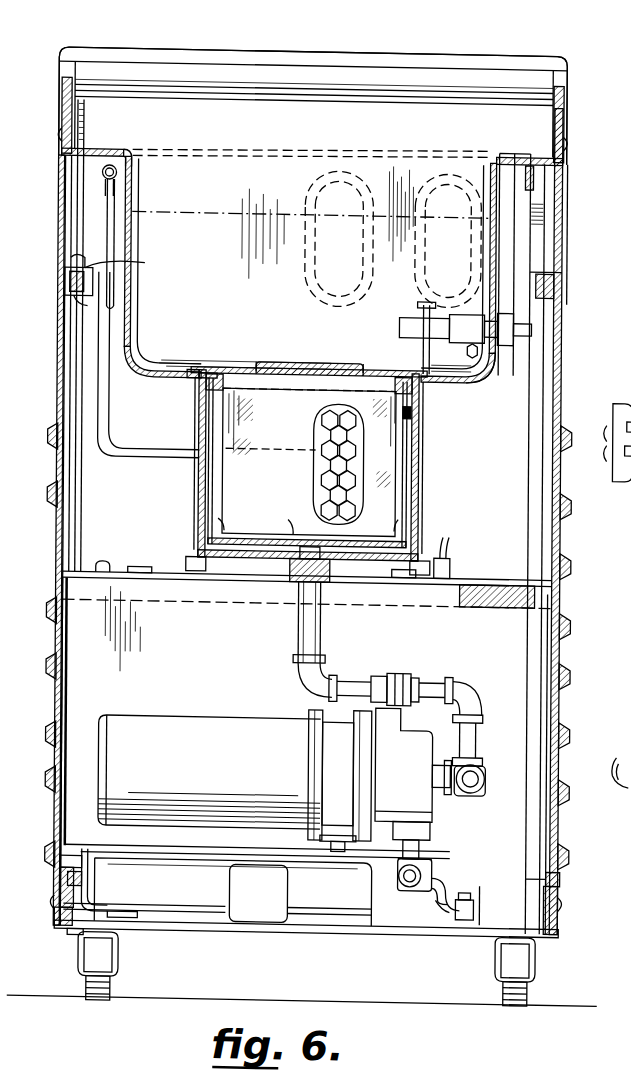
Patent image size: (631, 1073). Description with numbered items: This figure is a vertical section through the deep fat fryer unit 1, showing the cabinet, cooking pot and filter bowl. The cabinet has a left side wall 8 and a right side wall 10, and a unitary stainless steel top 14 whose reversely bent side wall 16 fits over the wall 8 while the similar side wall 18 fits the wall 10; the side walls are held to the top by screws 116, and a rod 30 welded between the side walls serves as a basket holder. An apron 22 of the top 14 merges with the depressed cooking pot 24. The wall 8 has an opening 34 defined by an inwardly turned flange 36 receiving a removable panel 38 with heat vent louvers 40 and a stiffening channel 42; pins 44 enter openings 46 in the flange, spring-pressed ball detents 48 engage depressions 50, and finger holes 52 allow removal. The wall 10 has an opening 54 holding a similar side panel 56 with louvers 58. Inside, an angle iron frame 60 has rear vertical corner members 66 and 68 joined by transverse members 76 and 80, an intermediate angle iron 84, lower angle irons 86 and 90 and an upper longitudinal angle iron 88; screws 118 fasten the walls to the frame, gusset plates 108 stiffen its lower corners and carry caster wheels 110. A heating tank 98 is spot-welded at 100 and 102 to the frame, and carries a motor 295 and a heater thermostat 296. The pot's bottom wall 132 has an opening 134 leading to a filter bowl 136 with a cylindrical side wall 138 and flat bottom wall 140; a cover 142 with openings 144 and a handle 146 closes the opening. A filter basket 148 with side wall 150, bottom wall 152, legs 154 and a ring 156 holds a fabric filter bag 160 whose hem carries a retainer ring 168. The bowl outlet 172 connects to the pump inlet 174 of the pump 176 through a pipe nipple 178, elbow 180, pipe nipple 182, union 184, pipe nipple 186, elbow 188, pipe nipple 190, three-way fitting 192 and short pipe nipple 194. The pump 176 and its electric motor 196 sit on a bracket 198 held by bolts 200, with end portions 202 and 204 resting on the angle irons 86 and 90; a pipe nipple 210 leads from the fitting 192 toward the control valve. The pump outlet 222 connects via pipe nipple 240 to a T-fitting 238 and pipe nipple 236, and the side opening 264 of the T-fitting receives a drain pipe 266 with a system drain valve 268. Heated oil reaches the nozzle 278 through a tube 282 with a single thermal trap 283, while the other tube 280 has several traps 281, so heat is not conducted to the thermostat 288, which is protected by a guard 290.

The deep fat fryer unit 1 is at (192, 36).
The left side wall 8 is at (57, 199).
The right side wall 10 is at (562, 265).
The top 14 is at (272, 47).
The reversely bent side wall 16 is at (57, 99).
The reversely bent side wall 18 is at (559, 94).
The apron 22 is at (105, 155).
The cooking pot 24 is at (302, 159).
The rod 30 is at (437, 101).
The opening 34 is at (62, 879).
The inwardly turned flange 36 is at (98, 271).
The removable panel 38 is at (56, 396).
The heat vent louvers 40 is at (53, 444).
The channel 42 is at (73, 304).
The pins 44 is at (60, 866).
The openings 46 is at (84, 886).
The spring-pressed ball detents 48 is at (63, 284).
The depressions 50 is at (78, 266).
The finger holes 52 is at (60, 334).
The opening 54 is at (566, 864).
The side panel 56 is at (564, 300).
The louvers 58 is at (563, 514).
The frame 60 is at (538, 219).
The vertical corner member 66 is at (78, 228).
The vertical corner member 68 is at (534, 242).
The transverse angle iron member 76 is at (522, 214).
The transverse angle iron member 80 is at (215, 928).
The intermediate angle iron 84 is at (58, 589).
The lower angle iron 86 is at (60, 922).
The longitudinal angle iron 88 is at (555, 165).
The angle iron 90 is at (558, 927).
The cooking oil heating tank 98 is at (220, 654).
The spot weld 100 is at (138, 577).
The spot weld 102 is at (98, 573).
The gusset plates 108 is at (122, 915).
The caster wheels 110 is at (118, 988).
The screws 116 is at (57, 137).
The screws 118 is at (58, 908).
The bottom wall 132 is at (190, 370).
The opening 134 is at (211, 375).
The filter bowl 136 is at (420, 486).
The cylindrical side wall 138 is at (418, 459).
The flat bottom wall 140 is at (215, 582).
The cover 142 is at (238, 368).
The openings 144 is at (328, 365).
The handle 146 is at (256, 365).
The filter basket 148 is at (410, 411).
The cylindrical side wall 150 is at (413, 436).
The circular bottom wall 152 is at (238, 548).
The legs 154 is at (208, 526).
The ring 156 is at (203, 392).
The fabric filter bag 160 is at (281, 428).
The retainer ring 168 is at (398, 371).
The outlet 172 is at (289, 580).
The inlet 174 is at (422, 801).
The pump 176 is at (320, 755).
The pipe nipple 178 is at (315, 617).
The elbow 180 is at (296, 680).
The pipe nipple 182 is at (349, 677).
The union 184 is at (394, 672).
The pipe nipple 186 is at (429, 681).
The elbow 188 is at (467, 686).
The pipe nipple 190 is at (481, 726).
The three-way fitting 192 is at (482, 763).
The short pipe nipple 194 is at (440, 766).
The electric motor 196 is at (202, 720).
The bracket 198 is at (184, 860).
The bolts 200 is at (341, 830).
The horizontal end portion 202 is at (73, 936).
The horizontal end portion 204 is at (370, 904).
The pipe nipple 210 is at (481, 783).
The outlet 222 is at (431, 826).
The pipe nipple 236 is at (403, 892).
The T-fitting 238 is at (432, 865).
The pipe nipple 240 is at (422, 845).
The side opening 264 is at (414, 934).
The drain pipe 266 is at (430, 930).
The system drain valve 268 is at (468, 924).
The nozzle 278 is at (484, 362).
The tube 280 is at (173, 455).
The traps 281 is at (109, 309).
The tube 282 is at (308, 305).
The trap 283 is at (406, 306).
The thermostat 288 is at (398, 325).
The guard 290 is at (430, 304).
The electric motor 295 is at (300, 884).
The heater thermostat 296 is at (456, 563).